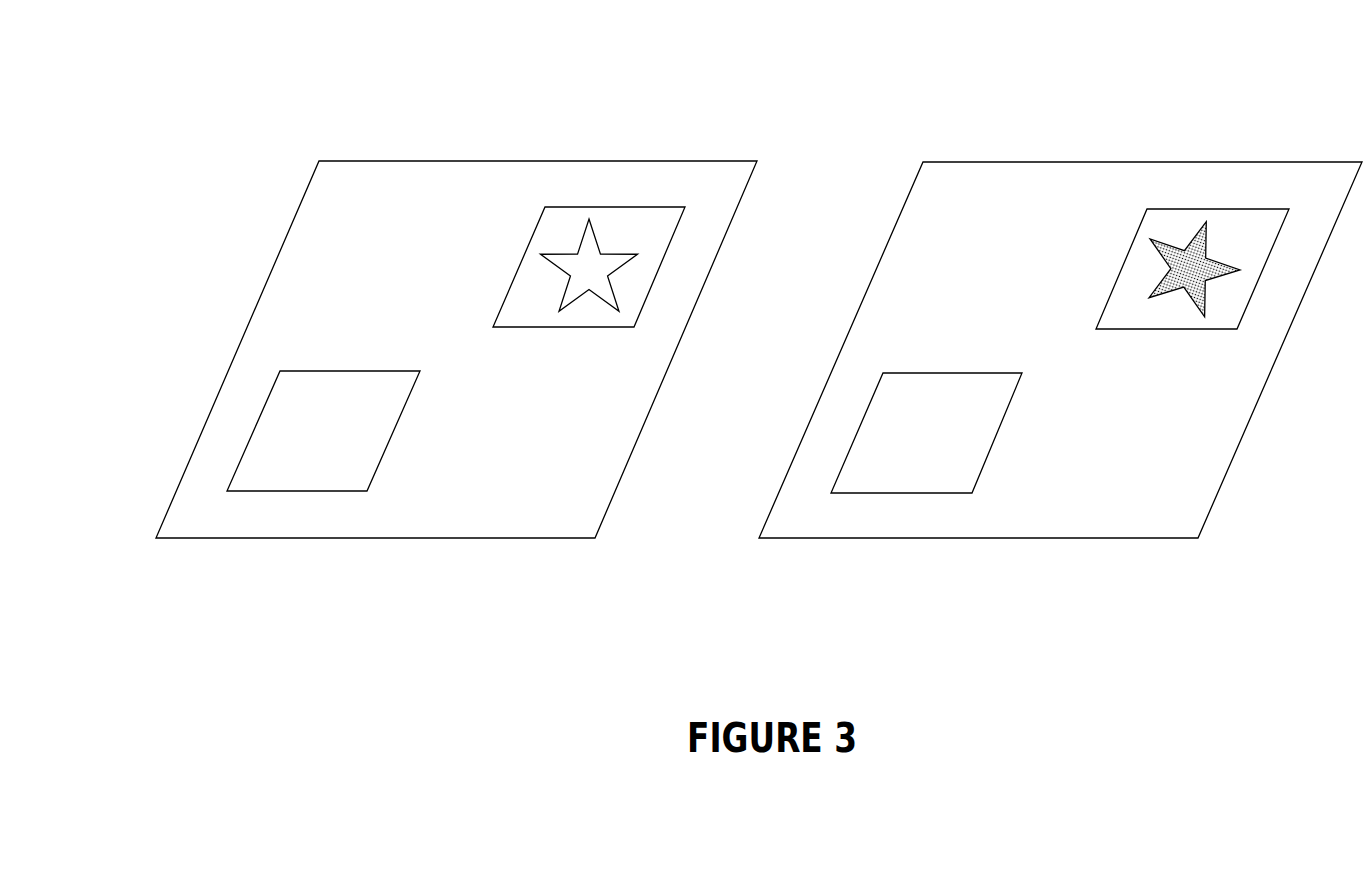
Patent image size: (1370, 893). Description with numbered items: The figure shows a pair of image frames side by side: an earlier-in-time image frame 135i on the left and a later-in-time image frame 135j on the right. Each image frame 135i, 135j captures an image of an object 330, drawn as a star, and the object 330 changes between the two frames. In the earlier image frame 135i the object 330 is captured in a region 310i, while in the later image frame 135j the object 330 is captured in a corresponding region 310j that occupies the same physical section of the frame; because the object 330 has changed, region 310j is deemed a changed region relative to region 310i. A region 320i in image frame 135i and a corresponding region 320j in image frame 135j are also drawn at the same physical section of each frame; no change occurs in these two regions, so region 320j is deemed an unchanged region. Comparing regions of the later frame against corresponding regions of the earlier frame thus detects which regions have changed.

The earlier-in-time image frame 135i is at (426, 592).
The later-in-time image frame 135j is at (1060, 592).
The region 310i is at (581, 207).
The corresponding region 310j is at (1182, 209).
The region 320i is at (258, 413).
The corresponding region 320j is at (860, 419).
The object 330 is at (602, 265).